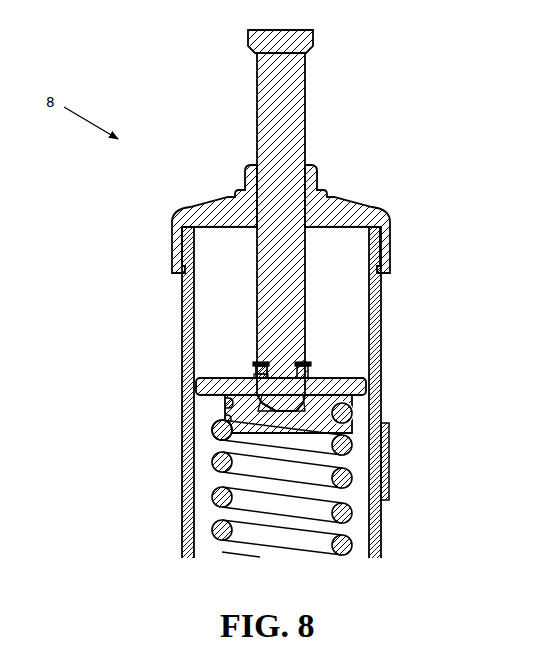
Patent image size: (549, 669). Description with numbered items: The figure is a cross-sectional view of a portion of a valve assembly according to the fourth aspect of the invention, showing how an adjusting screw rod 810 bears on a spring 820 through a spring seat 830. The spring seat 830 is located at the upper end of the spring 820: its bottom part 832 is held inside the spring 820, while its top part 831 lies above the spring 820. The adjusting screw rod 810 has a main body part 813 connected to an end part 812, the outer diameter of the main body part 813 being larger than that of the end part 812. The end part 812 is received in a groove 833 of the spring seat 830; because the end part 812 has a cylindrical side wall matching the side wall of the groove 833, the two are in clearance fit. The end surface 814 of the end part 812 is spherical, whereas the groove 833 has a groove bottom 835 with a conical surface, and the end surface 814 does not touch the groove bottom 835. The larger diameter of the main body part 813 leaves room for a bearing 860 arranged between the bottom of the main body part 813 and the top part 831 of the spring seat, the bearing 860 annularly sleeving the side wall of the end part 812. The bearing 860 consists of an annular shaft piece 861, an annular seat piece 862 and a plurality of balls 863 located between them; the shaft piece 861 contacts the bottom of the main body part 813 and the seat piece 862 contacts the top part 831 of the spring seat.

The adjusting screw rod 810 is at (309, 97).
The main body part 813 is at (288, 302).
The end part 812 is at (356, 393).
The end surface 814 is at (283, 406).
The spring 820 is at (313, 508).
The spring seat 830 is at (226, 411).
The top part 831 is at (366, 372).
The bottom part 832 is at (262, 398).
The groove 833 is at (352, 416).
The groove bottom 835 is at (220, 436).
The bearing 860 is at (312, 363).
The shaft piece 861 is at (256, 369).
The seat piece 862 is at (255, 370).
The balls 863 is at (253, 376).